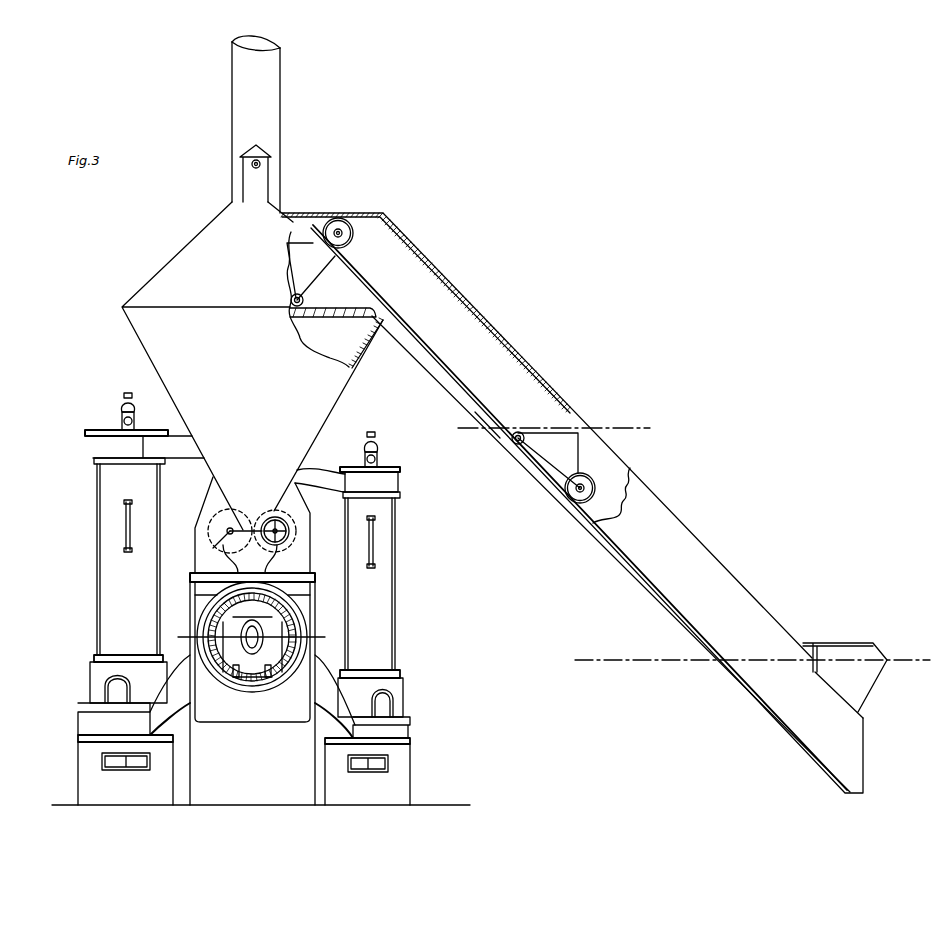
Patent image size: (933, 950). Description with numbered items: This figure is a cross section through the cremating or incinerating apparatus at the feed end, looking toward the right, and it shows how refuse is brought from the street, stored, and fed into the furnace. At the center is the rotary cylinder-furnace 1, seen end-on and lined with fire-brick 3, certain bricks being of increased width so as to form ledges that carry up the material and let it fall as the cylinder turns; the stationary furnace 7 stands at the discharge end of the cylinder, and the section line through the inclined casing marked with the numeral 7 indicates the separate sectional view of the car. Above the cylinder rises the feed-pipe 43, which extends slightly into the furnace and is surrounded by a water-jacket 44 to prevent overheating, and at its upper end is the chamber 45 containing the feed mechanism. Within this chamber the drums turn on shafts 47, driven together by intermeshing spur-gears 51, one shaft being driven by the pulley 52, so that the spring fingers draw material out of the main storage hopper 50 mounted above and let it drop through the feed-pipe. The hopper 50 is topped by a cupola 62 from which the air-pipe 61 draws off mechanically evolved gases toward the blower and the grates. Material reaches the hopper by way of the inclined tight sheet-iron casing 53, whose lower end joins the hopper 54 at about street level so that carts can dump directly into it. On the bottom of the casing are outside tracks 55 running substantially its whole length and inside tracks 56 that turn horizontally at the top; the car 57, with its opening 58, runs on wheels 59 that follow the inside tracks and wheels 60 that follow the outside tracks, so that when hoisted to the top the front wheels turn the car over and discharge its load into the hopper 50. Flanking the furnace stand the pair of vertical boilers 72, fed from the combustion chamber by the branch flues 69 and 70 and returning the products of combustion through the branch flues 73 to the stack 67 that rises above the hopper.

The rotary cylinder-furnace 1 is at (254, 645).
The fire-brick 3 is at (245, 640).
The stationary furnace 7 is at (555, 423).
The feed-pipe 43 is at (281, 647).
The water-jacket 44 is at (242, 689).
The chamber 45 is at (250, 559).
The shafts 47 is at (316, 514).
The main storage hopper 50 is at (252, 366).
The spur-gears 51 is at (212, 518).
The pulley 52 is at (290, 541).
The inclined casing 53 is at (572, 503).
The hopper 54 is at (752, 668).
The outside tracks 55 is at (494, 427).
The inside tracks 56 is at (371, 318).
The car 57 is at (433, 365).
The opening 58 is at (289, 266).
The wheels 59 is at (510, 465).
The wheels 60 is at (350, 243).
The air-pipe 61 is at (261, 164).
The cupola 62 is at (252, 181).
The stack 67 is at (270, 124).
The branch flue 69 is at (170, 695).
The branch flue 70 is at (335, 696).
The vertical boilers 72 is at (244, 599).
The branch flues 73 is at (219, 464).